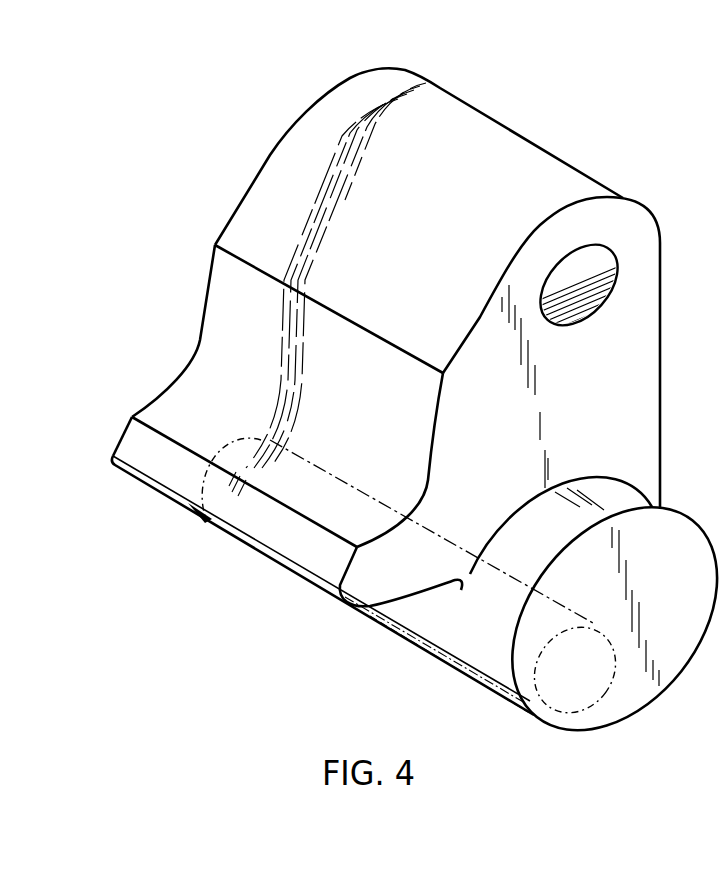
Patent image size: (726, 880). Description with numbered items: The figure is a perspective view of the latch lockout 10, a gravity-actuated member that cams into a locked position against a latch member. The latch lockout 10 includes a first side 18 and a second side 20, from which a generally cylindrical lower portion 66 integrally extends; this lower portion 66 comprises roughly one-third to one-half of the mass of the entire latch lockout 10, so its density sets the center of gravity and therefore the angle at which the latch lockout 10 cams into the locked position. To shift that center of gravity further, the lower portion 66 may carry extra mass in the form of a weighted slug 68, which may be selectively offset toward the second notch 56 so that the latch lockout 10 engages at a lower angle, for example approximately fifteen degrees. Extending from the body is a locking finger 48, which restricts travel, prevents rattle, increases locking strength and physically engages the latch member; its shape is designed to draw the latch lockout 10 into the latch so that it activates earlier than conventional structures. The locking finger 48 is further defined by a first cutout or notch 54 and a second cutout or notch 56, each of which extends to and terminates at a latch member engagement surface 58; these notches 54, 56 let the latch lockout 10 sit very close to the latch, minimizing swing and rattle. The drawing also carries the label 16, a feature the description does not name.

The latch lockout 10 is at (566, 90).
The aperture 16 is at (597, 268).
The first side 18 is at (589, 410).
The second side 20 is at (270, 156).
The locking finger 48 is at (143, 365).
The first cutout or notch 54 is at (230, 357).
The second cutout or notch 56 is at (450, 590).
The latch member engagement surface 58 is at (207, 520).
The lower portion 66 is at (658, 598).
The weighted slug 68 is at (572, 672).